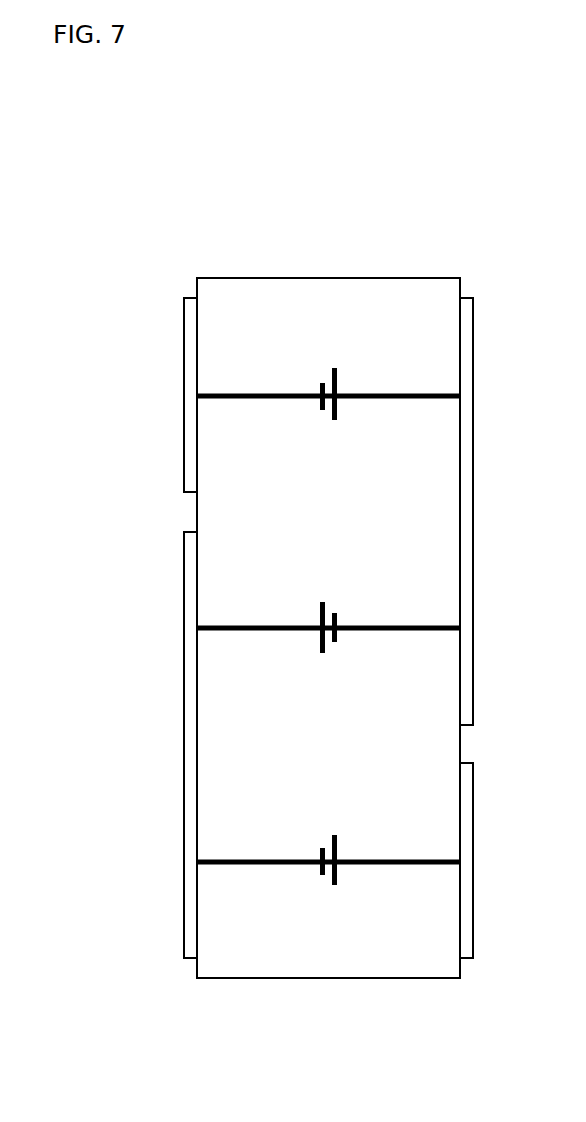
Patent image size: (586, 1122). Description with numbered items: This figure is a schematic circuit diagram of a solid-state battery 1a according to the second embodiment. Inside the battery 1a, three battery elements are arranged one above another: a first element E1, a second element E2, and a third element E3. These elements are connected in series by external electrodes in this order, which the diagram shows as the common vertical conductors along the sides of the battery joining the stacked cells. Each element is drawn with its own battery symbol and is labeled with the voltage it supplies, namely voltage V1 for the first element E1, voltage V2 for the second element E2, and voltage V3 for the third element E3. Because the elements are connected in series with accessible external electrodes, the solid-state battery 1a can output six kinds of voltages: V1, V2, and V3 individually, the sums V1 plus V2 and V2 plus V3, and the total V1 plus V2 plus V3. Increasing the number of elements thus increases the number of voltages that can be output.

The solid-state battery 1a is at (453, 227).
The first element E1 is at (340, 846).
The second element E2 is at (340, 618).
The third element E3 is at (340, 376).
The voltage V1 is at (331, 882).
The voltage V2 is at (331, 646).
The voltage V3 is at (331, 414).